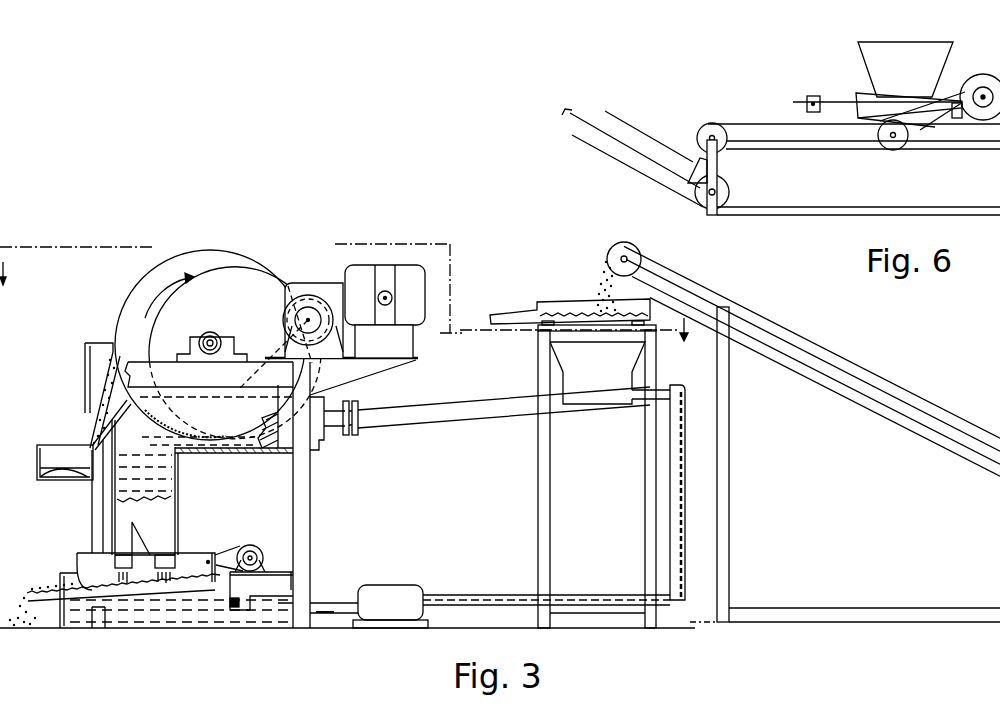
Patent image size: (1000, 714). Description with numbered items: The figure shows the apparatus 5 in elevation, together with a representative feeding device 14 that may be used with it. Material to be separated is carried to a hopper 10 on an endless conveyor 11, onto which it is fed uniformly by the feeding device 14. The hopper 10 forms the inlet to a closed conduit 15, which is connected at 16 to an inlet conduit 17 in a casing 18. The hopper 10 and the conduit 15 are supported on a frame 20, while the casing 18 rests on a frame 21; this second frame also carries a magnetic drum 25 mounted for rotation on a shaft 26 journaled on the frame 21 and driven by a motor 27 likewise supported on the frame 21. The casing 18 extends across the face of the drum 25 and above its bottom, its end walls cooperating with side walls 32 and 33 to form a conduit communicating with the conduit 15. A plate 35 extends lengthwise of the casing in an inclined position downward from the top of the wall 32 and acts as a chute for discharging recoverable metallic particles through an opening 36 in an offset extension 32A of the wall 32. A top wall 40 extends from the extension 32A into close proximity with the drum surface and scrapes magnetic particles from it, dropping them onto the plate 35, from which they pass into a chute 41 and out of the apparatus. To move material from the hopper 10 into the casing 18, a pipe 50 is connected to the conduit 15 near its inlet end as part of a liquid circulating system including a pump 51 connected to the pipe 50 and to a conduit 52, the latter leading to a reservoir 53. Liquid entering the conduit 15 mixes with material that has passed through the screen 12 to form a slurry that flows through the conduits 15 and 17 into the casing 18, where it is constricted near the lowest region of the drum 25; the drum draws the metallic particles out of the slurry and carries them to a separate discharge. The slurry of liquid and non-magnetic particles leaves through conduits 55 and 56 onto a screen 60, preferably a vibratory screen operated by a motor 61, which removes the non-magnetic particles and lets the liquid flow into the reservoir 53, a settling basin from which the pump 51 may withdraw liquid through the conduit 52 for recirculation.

In FIG. 3, the apparatus 5 is at (345, 312).
In FIG. 3, the hopper 10 is at (560, 357).
In FIG. 3, the endless conveyor 11 is at (836, 354).
In FIG. 6, the endless conveyor 11 is at (642, 130).
In FIG. 3, the screen 12 is at (556, 318).
In FIG. 6, the feeding device 14 is at (860, 95).
In FIG. 3, the closed conduit 15 is at (452, 421).
In FIG. 3, the connection 16 is at (350, 435).
In FIG. 3, the inlet conduit 17 is at (335, 429).
In FIG. 3, the casing 18 is at (273, 454).
In FIG. 3, the frame 20 is at (539, 522).
In FIG. 3, the frame 21 is at (311, 556).
In FIG. 3, the magnetic drum 25 is at (120, 316).
In FIG. 3, the shaft 26 is at (211, 340).
In FIG. 3, the motor 27 is at (412, 322).
In FIG. 3, the side wall 32 is at (136, 428).
In FIG. 3, the offset extension 32A is at (88, 387).
In FIG. 3, the side wall 33 is at (327, 404).
In FIG. 3, the plate 35 is at (88, 443).
In FIG. 3, the opening 36 is at (88, 427).
In FIG. 3, the top wall 40 is at (100, 342).
In FIG. 3, the chute 41 is at (37, 458).
In FIG. 3, the pipe 50 is at (668, 388).
In FIG. 3, the pump 51 is at (403, 584).
In FIG. 3, the conduit 52 is at (323, 607).
In FIG. 3, the reservoir 53 is at (238, 608).
In FIG. 3, the conduit 55 is at (117, 537).
In FIG. 3, the conduit 56 is at (163, 535).
In FIG. 3, the screen 60 is at (76, 574).
In FIG. 3, the motor 61 is at (258, 553).